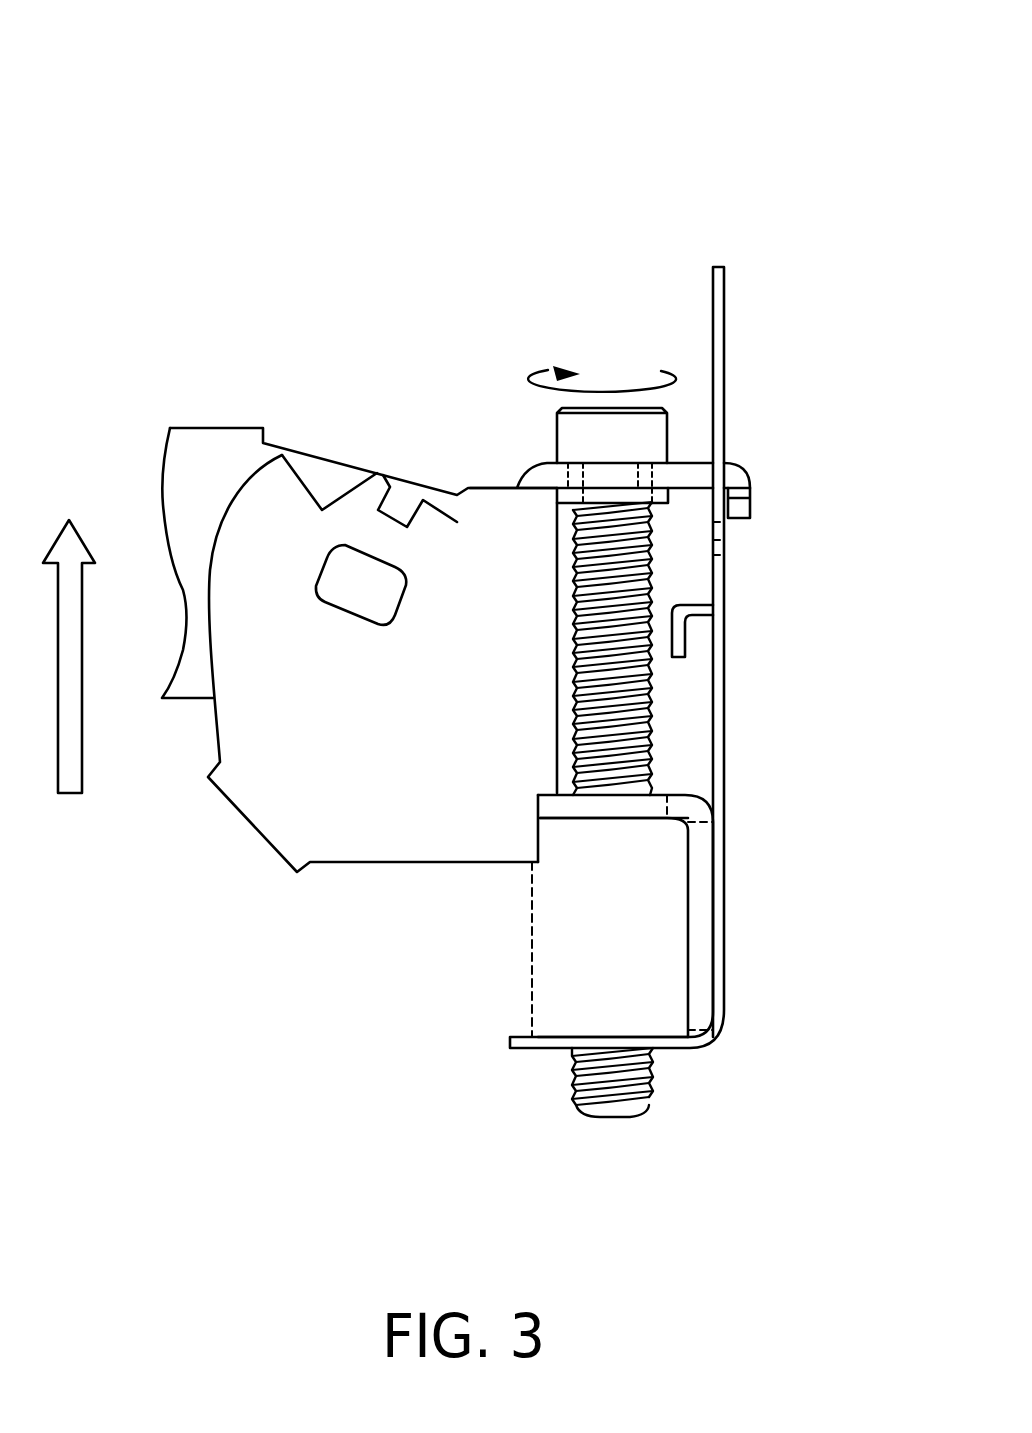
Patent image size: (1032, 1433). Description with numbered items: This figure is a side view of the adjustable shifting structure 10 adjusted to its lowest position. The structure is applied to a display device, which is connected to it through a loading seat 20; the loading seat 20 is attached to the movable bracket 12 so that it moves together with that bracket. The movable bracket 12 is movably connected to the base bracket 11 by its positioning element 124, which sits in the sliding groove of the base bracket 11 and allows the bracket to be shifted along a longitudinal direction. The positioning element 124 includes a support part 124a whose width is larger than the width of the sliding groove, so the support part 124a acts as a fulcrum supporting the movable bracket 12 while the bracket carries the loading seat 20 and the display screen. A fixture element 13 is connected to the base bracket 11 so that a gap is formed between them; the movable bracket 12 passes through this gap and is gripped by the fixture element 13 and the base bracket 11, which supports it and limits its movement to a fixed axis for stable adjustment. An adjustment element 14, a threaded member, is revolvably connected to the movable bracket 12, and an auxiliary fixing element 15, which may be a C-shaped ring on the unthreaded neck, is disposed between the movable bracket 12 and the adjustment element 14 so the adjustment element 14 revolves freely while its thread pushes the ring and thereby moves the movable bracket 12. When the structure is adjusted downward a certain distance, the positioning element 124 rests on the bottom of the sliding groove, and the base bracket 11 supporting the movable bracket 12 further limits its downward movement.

The adjustable shifting structure 10 is at (772, 148).
The base bracket 11 is at (722, 745).
The movable bracket 12 is at (700, 968).
The fixture element 13 is at (567, 963).
The adjustment element 14 is at (567, 443).
The auxiliary fixing element 15 is at (662, 492).
The positioning element 124 is at (733, 472).
The support part 124a is at (740, 507).
The loading seat 20 is at (292, 807).